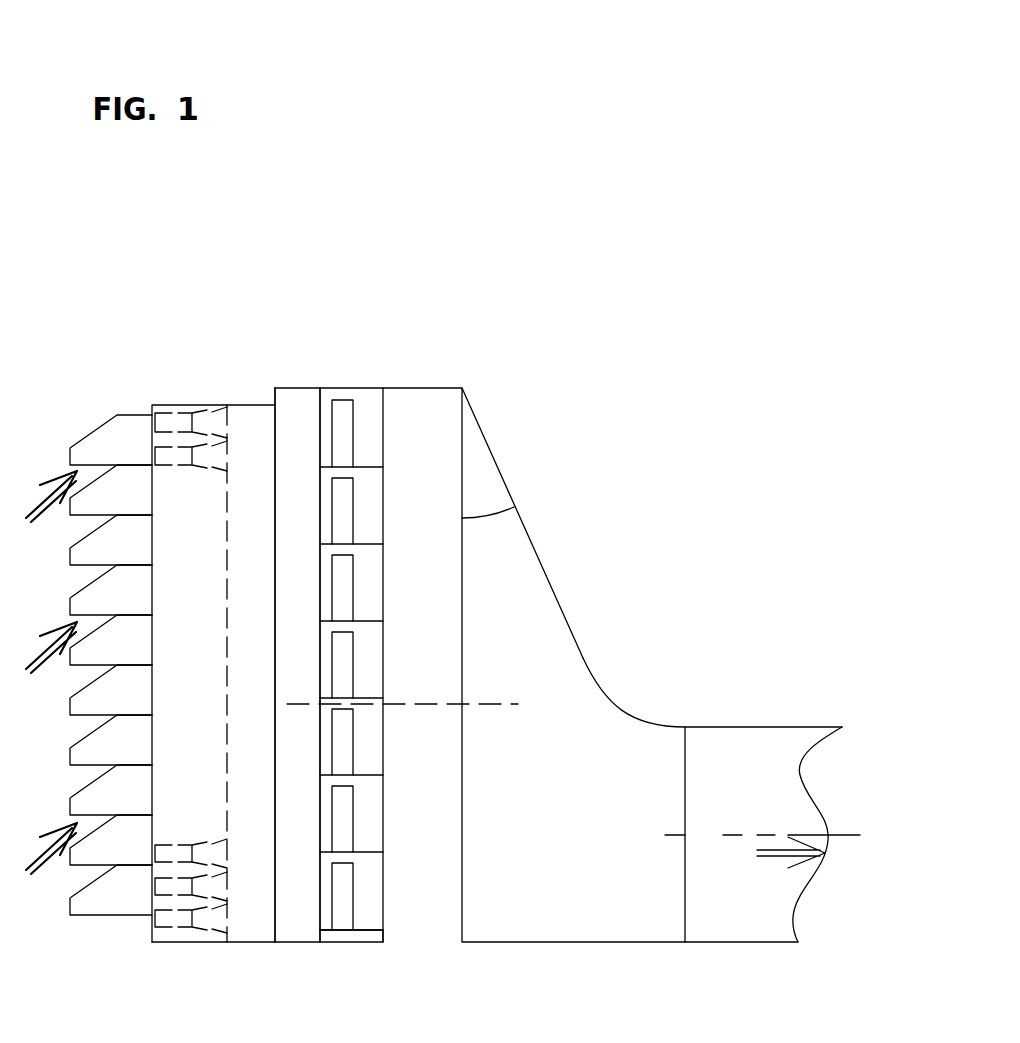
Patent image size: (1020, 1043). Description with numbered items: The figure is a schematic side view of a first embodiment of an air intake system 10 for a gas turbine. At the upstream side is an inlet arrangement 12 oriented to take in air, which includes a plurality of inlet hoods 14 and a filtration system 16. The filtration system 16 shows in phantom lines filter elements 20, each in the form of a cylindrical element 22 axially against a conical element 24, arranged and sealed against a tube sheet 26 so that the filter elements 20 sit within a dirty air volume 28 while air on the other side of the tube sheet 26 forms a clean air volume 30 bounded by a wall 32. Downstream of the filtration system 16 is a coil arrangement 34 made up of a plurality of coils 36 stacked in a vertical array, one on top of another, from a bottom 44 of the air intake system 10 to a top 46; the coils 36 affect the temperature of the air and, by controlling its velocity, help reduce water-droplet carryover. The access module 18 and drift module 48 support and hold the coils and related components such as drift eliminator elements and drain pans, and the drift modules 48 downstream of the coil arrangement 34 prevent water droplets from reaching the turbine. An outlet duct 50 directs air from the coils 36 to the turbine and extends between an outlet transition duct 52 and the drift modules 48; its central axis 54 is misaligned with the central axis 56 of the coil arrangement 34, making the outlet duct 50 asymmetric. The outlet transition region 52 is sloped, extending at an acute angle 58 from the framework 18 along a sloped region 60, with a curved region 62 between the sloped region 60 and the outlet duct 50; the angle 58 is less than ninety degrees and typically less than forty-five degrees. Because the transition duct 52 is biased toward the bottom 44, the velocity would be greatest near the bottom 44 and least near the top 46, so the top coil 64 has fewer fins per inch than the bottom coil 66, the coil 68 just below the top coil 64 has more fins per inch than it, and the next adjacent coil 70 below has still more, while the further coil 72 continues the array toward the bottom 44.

The air intake system 10 is at (566, 262).
The inlet arrangement 12 is at (93, 594).
The inlet hoods 14 is at (93, 418).
The filtration system 16 is at (197, 400).
The access module 18 is at (298, 943).
The filter elements 20 is at (199, 934).
The cylindrical element 22 is at (165, 926).
The conical element 24 is at (218, 931).
The tube sheet 26 is at (226, 820).
The dirty air volume 28 is at (217, 571).
The clean air volume 30 is at (279, 665).
The front wall 32 is at (288, 388).
The coil arrangement 34 is at (419, 620).
The coils 36 is at (357, 743).
The bottom 44 is at (368, 943).
The top 46 is at (300, 390).
The drift modules 48 is at (423, 388).
The outlet duct 50 is at (747, 725).
The outlet transition duct 52 is at (573, 557).
The central axis of outlet duct 54 is at (725, 836).
The central axis of coil arrangement 56 is at (489, 703).
The acute angle 58 is at (485, 518).
The sloped region 60 is at (550, 590).
The curved region 62 is at (613, 703).
The top coil 64 is at (353, 437).
The bottom coil 66 is at (353, 906).
The coil adjacent to and below top coil 68 is at (353, 510).
The next adjacent coil 70 is at (353, 597).
The fourth coil 72 is at (353, 672).